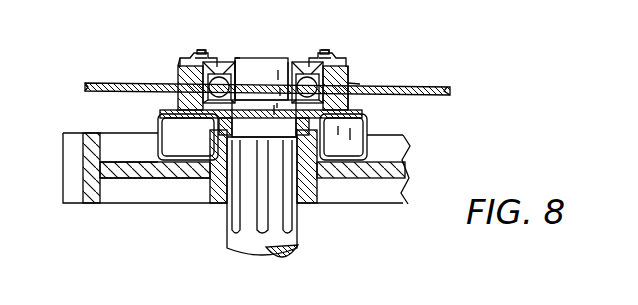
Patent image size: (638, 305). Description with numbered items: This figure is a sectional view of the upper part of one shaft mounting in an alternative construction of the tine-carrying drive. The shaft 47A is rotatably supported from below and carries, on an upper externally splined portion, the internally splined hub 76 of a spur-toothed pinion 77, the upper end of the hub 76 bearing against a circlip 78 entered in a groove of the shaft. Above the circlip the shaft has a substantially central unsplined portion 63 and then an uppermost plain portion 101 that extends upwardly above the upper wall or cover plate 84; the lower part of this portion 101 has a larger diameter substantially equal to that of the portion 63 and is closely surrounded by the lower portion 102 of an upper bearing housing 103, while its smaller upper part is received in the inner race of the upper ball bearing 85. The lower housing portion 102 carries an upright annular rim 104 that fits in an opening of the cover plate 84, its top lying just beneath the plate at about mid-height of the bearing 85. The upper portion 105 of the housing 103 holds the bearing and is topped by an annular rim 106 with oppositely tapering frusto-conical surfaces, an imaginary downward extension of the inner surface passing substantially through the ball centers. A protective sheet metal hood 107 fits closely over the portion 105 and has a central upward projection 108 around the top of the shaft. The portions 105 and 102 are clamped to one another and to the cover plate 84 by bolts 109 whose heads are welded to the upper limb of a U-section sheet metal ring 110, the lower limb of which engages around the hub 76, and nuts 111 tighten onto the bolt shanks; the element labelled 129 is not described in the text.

The shaft 47A is at (308, 247).
The central unsplined portion 63 is at (232, 247).
The hub 76 is at (207, 177).
The pinion 77 is at (63, 133).
The circlip 78 is at (233, 129).
The upper wall or cover plate 84 is at (103, 82).
The upper ball bearing 85 is at (308, 78).
The uppermost plain portion 101 is at (280, 66).
The lower portion of upper bearing housing 102 is at (345, 107).
The upper bearing housing 103 is at (366, 88).
The upright annular rim 104 is at (355, 86).
The upper portion of upper bearing housing 105 is at (181, 93).
The annular rim 106 is at (236, 57).
The protective metal hood 107 is at (200, 60).
The central upward projection 108 is at (256, 57).
The bolt 109 is at (204, 53).
The sheet metal ring 110 is at (157, 117).
The nut 111 is at (192, 56).
The cup member 129 is at (218, 129).